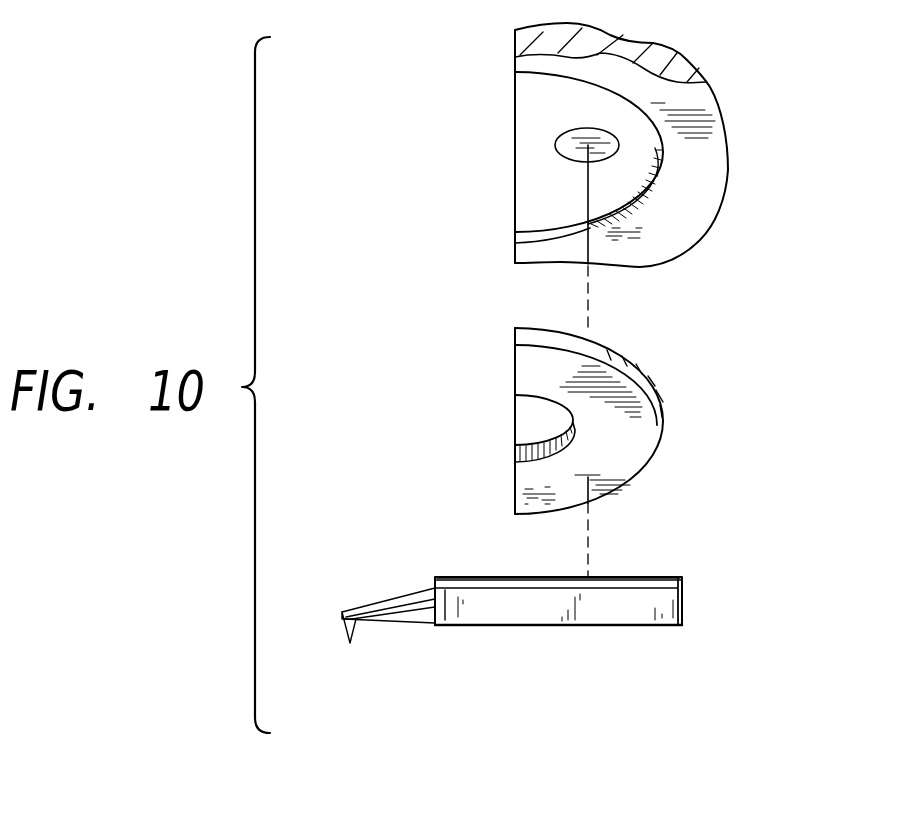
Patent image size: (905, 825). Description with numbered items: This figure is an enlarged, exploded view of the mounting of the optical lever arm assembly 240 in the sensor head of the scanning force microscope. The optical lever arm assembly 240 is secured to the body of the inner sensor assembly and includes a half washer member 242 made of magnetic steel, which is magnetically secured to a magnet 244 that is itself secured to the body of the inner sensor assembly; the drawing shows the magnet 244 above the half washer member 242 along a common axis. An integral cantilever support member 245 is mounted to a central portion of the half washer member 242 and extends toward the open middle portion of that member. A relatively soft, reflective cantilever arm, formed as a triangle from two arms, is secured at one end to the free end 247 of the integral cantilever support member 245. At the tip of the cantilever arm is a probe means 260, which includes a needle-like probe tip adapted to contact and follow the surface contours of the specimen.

The magnet 244 is at (610, 157).
The half washer member 242 is at (530, 373).
The optical lever arm assembly 240 is at (512, 613).
The free end 247 is at (455, 575).
The integral cantilever support member 245 is at (658, 623).
The probe means 260 is at (348, 637).